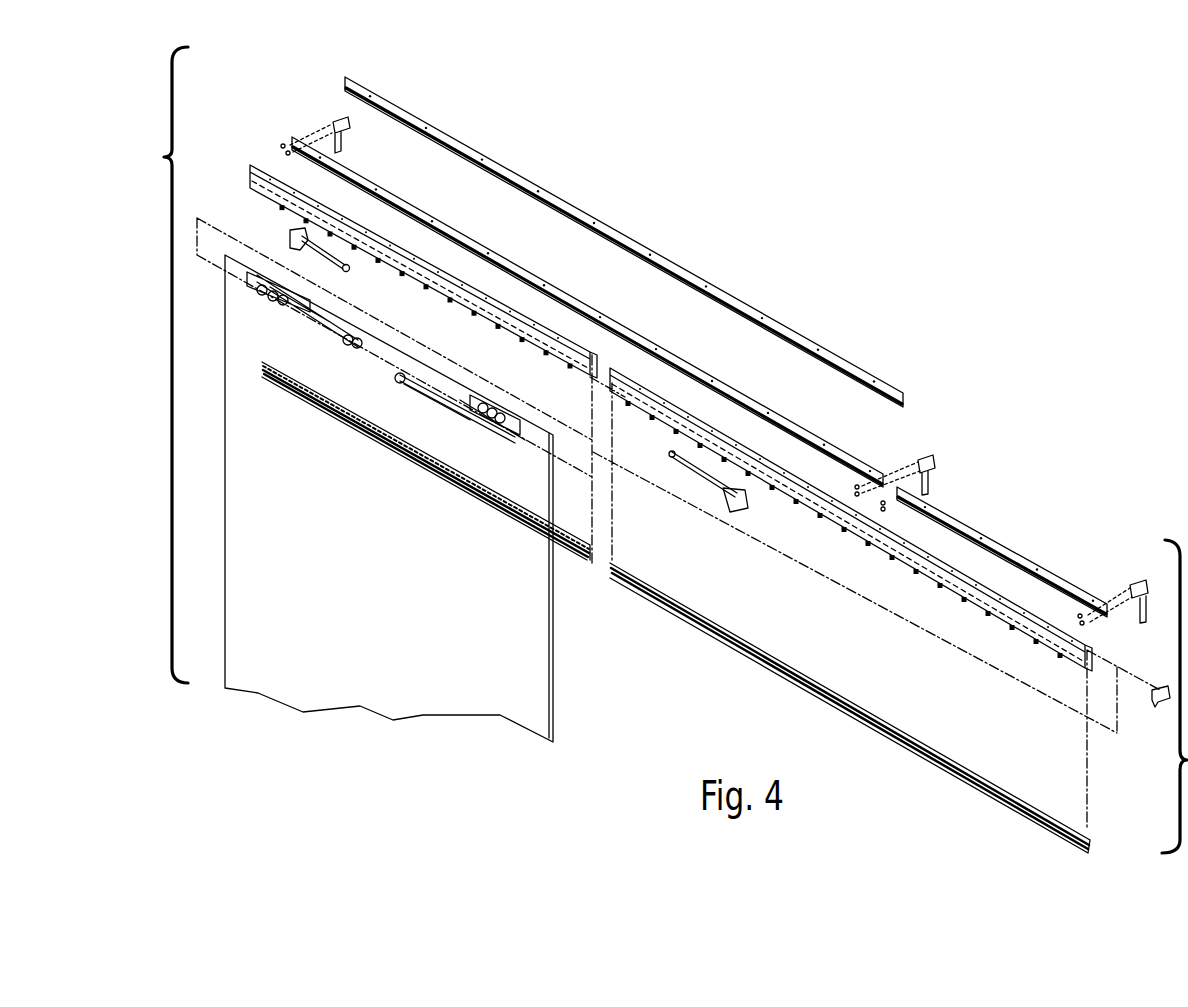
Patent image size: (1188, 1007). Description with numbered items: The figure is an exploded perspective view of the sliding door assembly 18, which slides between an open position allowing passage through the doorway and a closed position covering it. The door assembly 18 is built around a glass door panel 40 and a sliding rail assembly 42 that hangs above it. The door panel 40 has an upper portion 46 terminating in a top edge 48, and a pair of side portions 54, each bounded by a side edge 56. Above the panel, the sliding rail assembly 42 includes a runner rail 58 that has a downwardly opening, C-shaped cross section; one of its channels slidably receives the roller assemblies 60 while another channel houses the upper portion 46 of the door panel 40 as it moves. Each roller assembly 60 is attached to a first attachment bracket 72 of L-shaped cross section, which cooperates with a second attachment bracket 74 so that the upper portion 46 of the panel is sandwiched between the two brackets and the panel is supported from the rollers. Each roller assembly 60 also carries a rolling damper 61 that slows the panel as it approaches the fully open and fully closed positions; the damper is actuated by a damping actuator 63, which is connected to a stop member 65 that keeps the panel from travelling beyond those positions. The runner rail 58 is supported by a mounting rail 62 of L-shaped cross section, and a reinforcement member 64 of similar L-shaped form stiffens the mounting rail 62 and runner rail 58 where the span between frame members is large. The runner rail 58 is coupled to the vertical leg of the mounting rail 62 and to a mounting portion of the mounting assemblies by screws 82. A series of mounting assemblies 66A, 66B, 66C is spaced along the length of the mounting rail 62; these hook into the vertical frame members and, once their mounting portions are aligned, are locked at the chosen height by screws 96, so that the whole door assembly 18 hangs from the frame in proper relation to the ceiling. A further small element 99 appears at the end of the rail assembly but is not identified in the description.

The sliding door assembly 18 is at (189, 365).
The glass door panel 40 is at (600, 592).
The sliding rail assembly 42 is at (888, 615).
The upper portion 46 is at (378, 362).
The top edge 48 is at (547, 430).
The side portions 54 is at (237, 507).
The side edge 56 is at (228, 543).
The runner rail 58 is at (500, 292).
The roller assembly 60 is at (432, 370).
The rolling damper 61 is at (437, 388).
The mounting rail 62 is at (735, 370).
The damping actuator 63 is at (320, 262).
The reinforcement member 64 is at (845, 348).
The stop member 65 is at (290, 236).
The mounting assembly 66A is at (328, 110).
The mounting assembly 66B is at (932, 448).
The mounting assembly 66C is at (1142, 575).
The first attachment bracket 72 is at (493, 405).
The second attachment bracket 74 is at (512, 410).
The screws 82 is at (890, 557).
The screws 96 is at (1082, 612).
The end stop 99 is at (1158, 703).